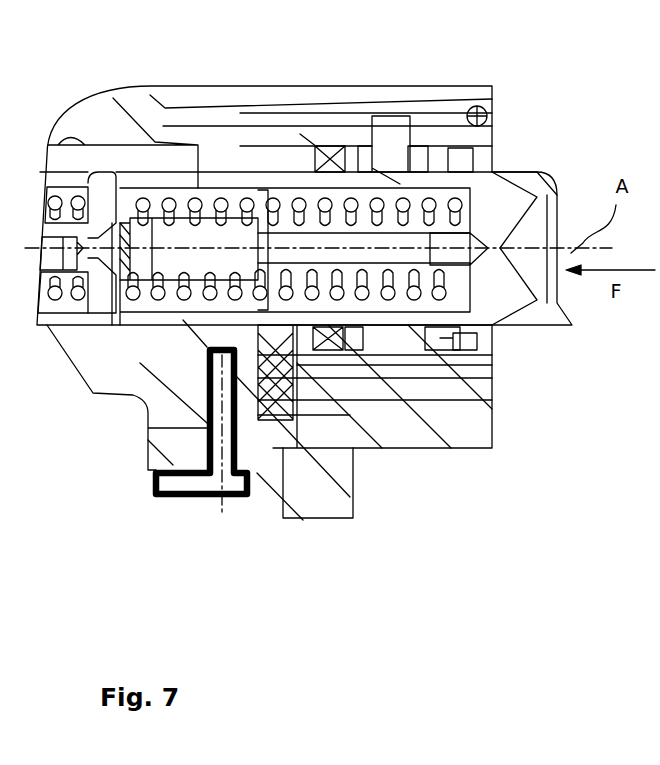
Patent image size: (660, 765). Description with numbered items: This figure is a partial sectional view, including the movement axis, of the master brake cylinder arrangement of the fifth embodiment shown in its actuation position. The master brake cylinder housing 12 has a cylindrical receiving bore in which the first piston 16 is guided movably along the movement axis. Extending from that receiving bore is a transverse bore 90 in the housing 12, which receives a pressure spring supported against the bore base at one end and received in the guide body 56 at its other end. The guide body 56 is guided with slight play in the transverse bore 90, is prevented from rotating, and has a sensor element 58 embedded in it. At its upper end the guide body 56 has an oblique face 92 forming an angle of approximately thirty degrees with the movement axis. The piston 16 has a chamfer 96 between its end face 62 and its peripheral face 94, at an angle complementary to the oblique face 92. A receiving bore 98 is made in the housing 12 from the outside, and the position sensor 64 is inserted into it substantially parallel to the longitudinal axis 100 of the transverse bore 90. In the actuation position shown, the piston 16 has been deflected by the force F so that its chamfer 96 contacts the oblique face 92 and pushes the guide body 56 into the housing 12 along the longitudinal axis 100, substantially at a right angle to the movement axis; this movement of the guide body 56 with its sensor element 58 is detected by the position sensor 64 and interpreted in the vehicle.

The master brake cylinder housing 12 is at (112, 380).
The first piston 16 is at (368, 172).
The guide body 56 is at (440, 413).
The sensor element 58 is at (440, 366).
The end face 62 is at (257, 188).
The position sensor 64 is at (225, 500).
The transverse bore 90 is at (505, 415).
The oblique face 92 is at (477, 338).
The peripheral face 94 is at (435, 172).
The chamfer 96 is at (258, 170).
The receiving bore 98 is at (147, 437).
The longitudinal axis 100 is at (358, 449).